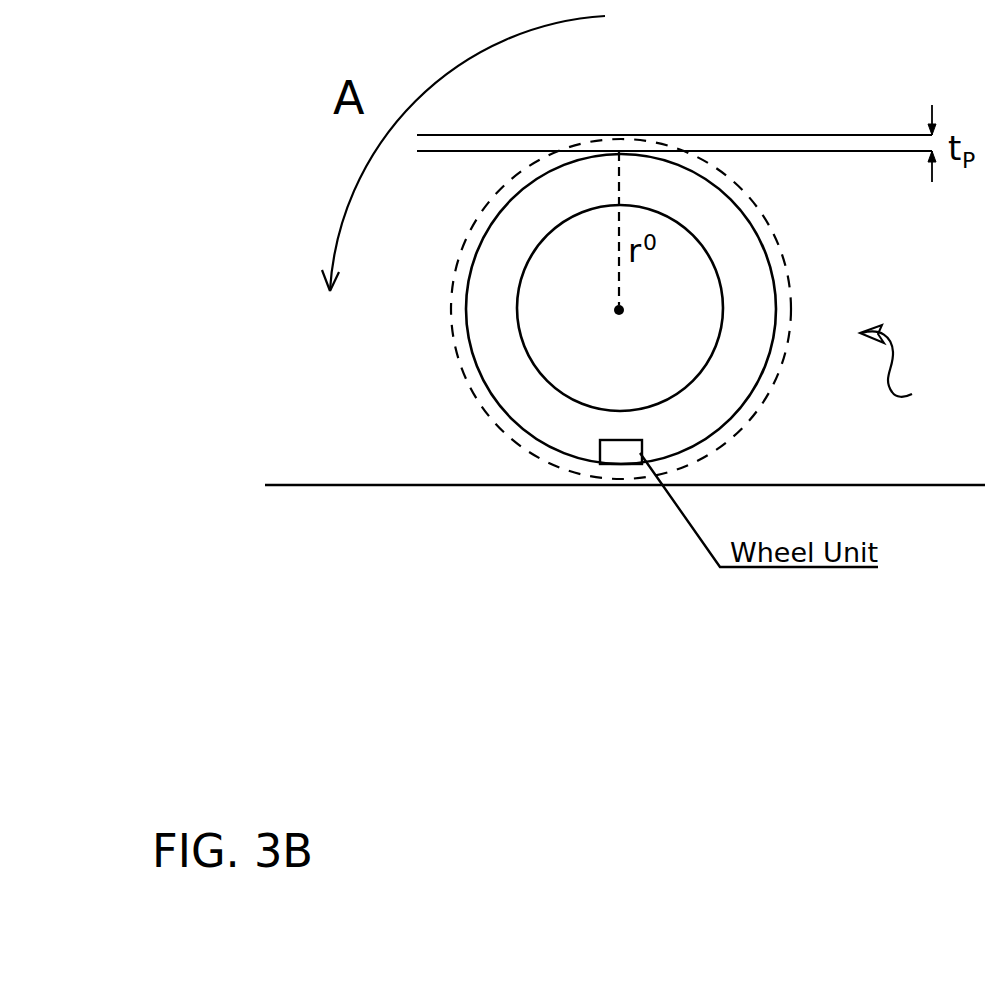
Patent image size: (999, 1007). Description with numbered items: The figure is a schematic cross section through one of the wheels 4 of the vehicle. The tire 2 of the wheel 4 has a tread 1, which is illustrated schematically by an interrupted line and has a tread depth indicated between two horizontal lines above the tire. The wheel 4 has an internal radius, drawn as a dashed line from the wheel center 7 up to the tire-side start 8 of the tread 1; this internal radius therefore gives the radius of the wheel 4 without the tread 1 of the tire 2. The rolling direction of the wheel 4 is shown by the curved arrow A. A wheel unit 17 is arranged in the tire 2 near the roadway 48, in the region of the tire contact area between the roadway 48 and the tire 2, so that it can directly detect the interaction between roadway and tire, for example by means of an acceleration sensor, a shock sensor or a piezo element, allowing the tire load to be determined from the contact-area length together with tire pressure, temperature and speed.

The tread 1 is at (760, 403).
The tire 2 is at (495, 371).
The wheel 4 is at (899, 369).
The wheel center 7 is at (626, 314).
The tire-side start of the tread 8 is at (482, 248).
The wheel unit 17 is at (608, 452).
The roadway 48 is at (326, 470).